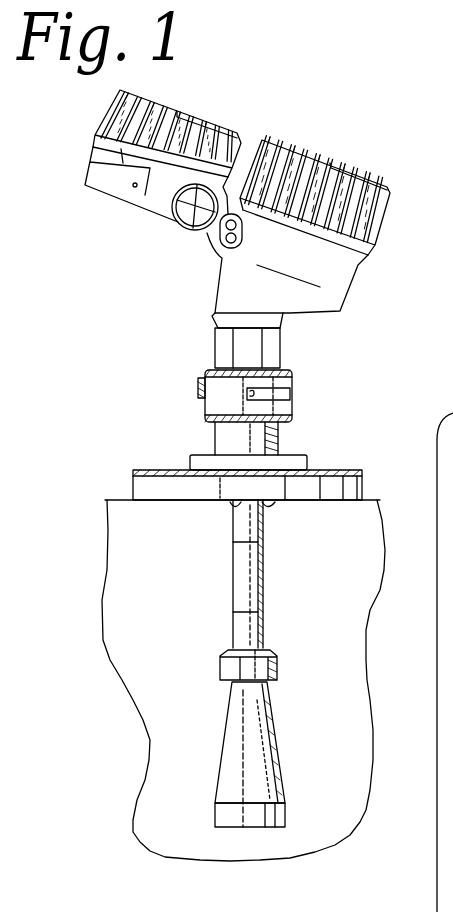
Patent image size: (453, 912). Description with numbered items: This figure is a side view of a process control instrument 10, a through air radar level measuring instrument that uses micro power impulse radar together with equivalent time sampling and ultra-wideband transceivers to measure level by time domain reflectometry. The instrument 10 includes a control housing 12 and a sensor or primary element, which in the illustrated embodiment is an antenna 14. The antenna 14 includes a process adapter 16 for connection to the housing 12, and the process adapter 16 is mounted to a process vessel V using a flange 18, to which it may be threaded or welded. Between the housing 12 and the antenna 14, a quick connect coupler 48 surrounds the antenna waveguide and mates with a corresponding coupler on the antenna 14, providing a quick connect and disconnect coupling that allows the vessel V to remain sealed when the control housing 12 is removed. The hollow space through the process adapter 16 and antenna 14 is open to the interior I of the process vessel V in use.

The process control instrument 10 is at (397, 158).
The control housing 12 is at (369, 280).
The antenna 14 is at (233, 589).
The process adapter 16 is at (291, 437).
The flange 18 is at (365, 489).
The quick connect coupler 48 is at (285, 348).
The process vessel V is at (125, 530).
The interior I is at (180, 712).